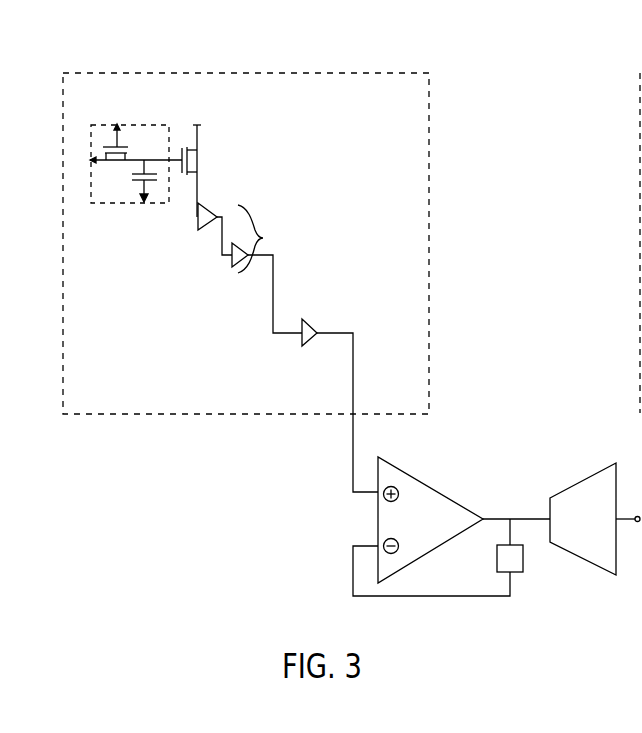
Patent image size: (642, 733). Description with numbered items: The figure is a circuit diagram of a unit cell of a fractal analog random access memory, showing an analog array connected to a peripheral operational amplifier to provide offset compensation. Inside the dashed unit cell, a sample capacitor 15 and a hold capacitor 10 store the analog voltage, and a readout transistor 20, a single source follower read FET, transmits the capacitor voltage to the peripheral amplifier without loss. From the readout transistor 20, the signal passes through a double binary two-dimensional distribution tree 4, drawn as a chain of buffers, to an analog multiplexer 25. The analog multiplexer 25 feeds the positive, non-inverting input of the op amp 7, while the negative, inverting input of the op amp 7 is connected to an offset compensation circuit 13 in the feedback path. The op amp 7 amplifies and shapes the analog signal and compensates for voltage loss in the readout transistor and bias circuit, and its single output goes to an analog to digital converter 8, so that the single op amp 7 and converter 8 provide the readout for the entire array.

The sample capacitor 15 is at (126, 128).
The hold capacitor 10 is at (147, 165).
The readout transistor 20 is at (190, 124).
The double binary 2-D distribution tree 4 is at (263, 238).
The analog multiplexer 25 is at (303, 340).
The operational amplifier 7 is at (430, 521).
The analog to digital converter 8 is at (590, 520).
The offset compensation circuit 13 is at (515, 557).